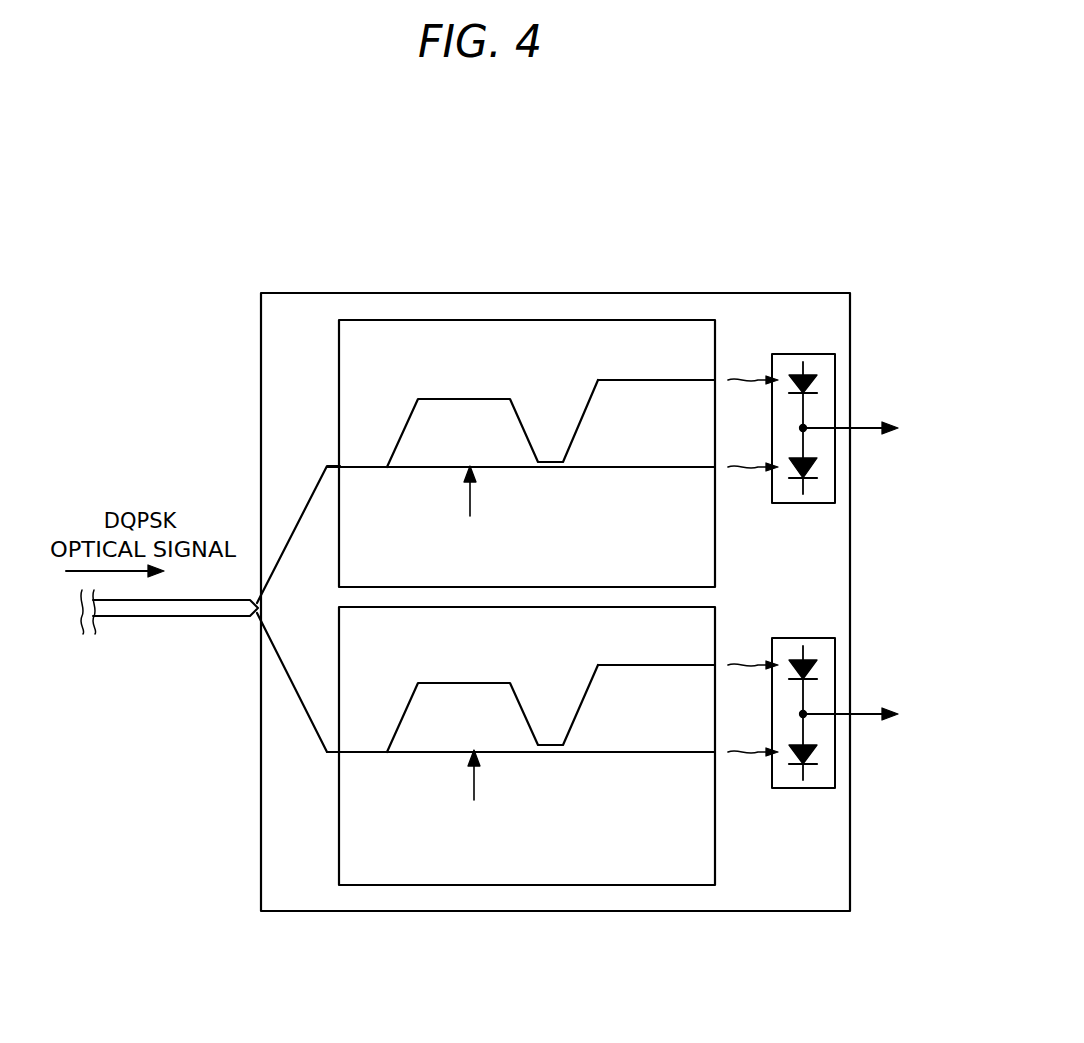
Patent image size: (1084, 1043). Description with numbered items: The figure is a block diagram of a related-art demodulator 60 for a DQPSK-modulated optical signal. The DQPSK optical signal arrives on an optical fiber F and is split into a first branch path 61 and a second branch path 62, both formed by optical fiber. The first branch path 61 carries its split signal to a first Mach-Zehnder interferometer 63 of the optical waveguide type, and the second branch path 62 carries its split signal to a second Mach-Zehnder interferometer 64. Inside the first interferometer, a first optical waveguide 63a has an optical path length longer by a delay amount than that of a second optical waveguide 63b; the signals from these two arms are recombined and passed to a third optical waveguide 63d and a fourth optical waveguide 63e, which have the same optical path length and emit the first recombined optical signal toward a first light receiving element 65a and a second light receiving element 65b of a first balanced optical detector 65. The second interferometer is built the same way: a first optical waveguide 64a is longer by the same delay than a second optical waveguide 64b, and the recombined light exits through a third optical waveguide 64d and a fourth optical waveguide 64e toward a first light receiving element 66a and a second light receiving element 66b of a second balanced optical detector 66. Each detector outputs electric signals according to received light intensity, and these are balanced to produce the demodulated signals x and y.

The demodulator 60 is at (785, 912).
The optical fiber F is at (175, 617).
The first branch path 61 is at (305, 506).
The second branch path 62 is at (300, 713).
The first Mach-Zehnder interferometer 63 is at (552, 455).
The first optical waveguide 63a is at (503, 399).
The second optical waveguide 63b is at (400, 470).
The third optical waveguide 63d is at (652, 382).
The fourth optical waveguide 63e is at (637, 470).
The second Mach-Zehnder interferometer 64 is at (552, 746).
The first optical waveguide 64a is at (487, 683).
The second optical waveguide 64b is at (404, 755).
The third optical waveguide 64d is at (652, 667).
The fourth optical waveguide 64e is at (637, 755).
The first balanced optical detector 65 is at (845, 462).
The first light receiving element 65a is at (816, 383).
The second light receiving element 65b is at (816, 470).
The second balanced optical detector 66 is at (845, 745).
The first light receiving element 66a is at (816, 668).
The second light receiving element 66b is at (816, 756).